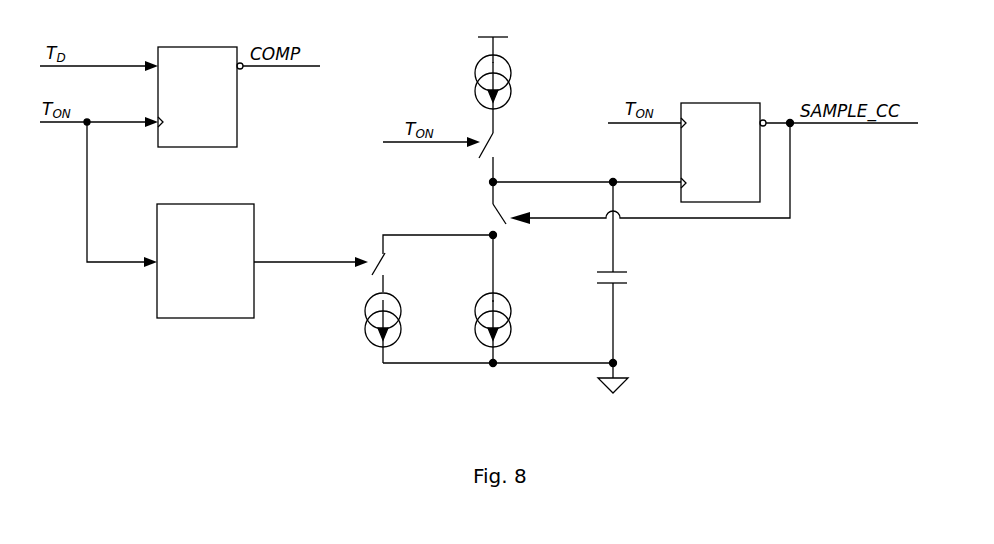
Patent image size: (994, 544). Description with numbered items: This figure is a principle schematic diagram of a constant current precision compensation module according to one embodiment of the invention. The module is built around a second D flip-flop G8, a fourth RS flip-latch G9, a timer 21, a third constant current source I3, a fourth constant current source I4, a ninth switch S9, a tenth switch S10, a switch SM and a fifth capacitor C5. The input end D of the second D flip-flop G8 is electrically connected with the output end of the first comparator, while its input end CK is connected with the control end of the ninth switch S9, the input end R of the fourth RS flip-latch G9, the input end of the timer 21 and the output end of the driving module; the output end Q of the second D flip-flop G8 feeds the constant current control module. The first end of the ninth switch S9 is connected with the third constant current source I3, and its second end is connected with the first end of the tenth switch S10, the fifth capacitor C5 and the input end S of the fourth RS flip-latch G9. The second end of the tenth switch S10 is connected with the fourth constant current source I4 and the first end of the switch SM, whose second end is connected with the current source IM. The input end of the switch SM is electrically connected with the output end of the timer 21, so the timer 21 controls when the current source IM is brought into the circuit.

The timer 21 is at (205, 261).
The second D flip-flop G8 is at (200, 97).
The fourth RS flip-latch G9 is at (723, 152).
The third constant current source I3 is at (503, 85).
The fourth constant current source I4 is at (503, 299).
The current source IM is at (392, 328).
The ninth switch S9 is at (502, 157).
The tenth switch S10 is at (477, 210).
The switch SM is at (432, 263).
The fifth capacitor C5 is at (626, 272).